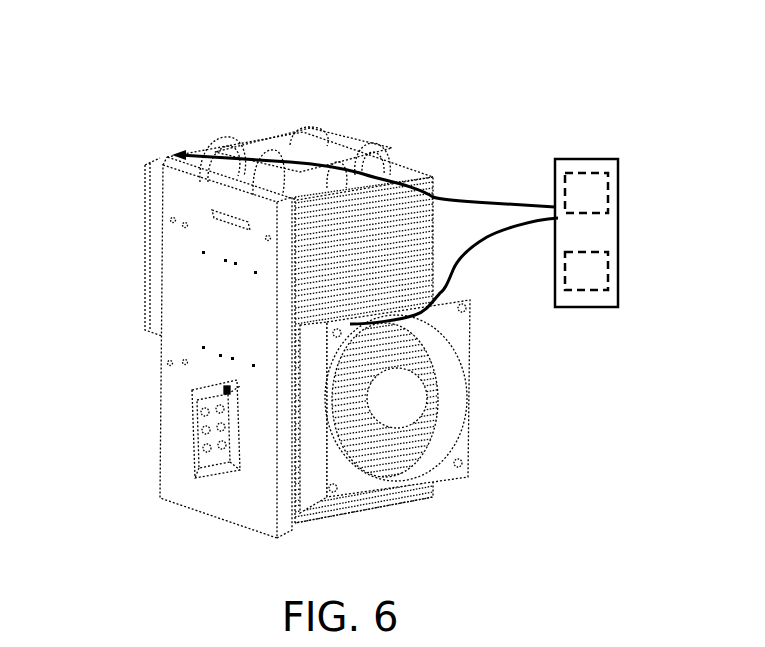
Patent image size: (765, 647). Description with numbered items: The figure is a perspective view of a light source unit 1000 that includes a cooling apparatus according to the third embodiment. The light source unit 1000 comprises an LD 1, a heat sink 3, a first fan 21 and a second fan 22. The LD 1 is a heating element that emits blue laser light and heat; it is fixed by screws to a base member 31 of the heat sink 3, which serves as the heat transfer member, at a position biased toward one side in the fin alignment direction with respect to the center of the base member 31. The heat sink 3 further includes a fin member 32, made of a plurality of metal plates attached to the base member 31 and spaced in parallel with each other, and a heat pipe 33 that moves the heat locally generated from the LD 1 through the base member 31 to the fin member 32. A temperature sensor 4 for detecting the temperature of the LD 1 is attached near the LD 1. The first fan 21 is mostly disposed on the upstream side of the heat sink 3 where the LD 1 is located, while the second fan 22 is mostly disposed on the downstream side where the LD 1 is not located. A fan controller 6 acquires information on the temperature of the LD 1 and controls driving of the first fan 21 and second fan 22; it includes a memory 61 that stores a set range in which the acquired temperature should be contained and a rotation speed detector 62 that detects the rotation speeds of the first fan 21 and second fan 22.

The light source unit 1000 is at (130, 76).
The LD 1 is at (200, 437).
The heat sink 3 is at (198, 72).
The temperature sensor 4 is at (227, 388).
The fan controller 6 is at (618, 232).
The first fan 21 is at (458, 440).
The second fan 22 is at (155, 185).
The base member 31 is at (197, 185).
The fin member 32 is at (353, 163).
The heat pipe 33 is at (290, 140).
The memory 61 is at (588, 278).
The rotation speed detector 62 is at (585, 183).